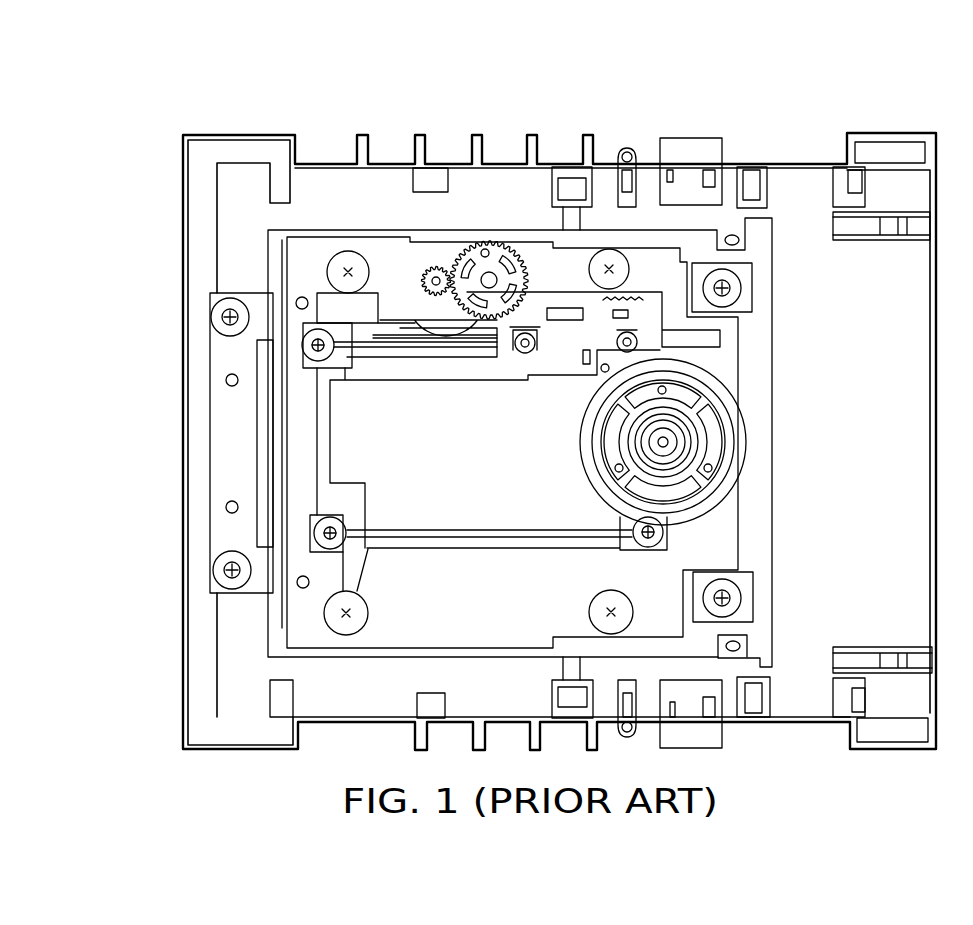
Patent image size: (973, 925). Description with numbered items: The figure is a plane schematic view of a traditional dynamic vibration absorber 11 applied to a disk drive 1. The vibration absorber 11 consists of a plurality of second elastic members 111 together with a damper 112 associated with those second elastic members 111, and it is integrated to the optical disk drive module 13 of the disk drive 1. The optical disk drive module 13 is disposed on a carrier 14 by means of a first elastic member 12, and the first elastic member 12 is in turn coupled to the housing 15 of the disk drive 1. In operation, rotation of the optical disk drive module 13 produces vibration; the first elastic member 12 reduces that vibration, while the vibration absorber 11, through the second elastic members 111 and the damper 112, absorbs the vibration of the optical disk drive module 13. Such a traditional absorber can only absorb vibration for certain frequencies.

The disk drive 1 is at (888, 138).
The vibration absorber 11 is at (93, 200).
The second elastic member 111 is at (331, 274).
The damper 112 is at (387, 247).
The first elastic member 12 is at (222, 582).
The optical disk drive module 13 is at (568, 340).
The carrier 14 is at (222, 463).
The housing 15 is at (238, 706).